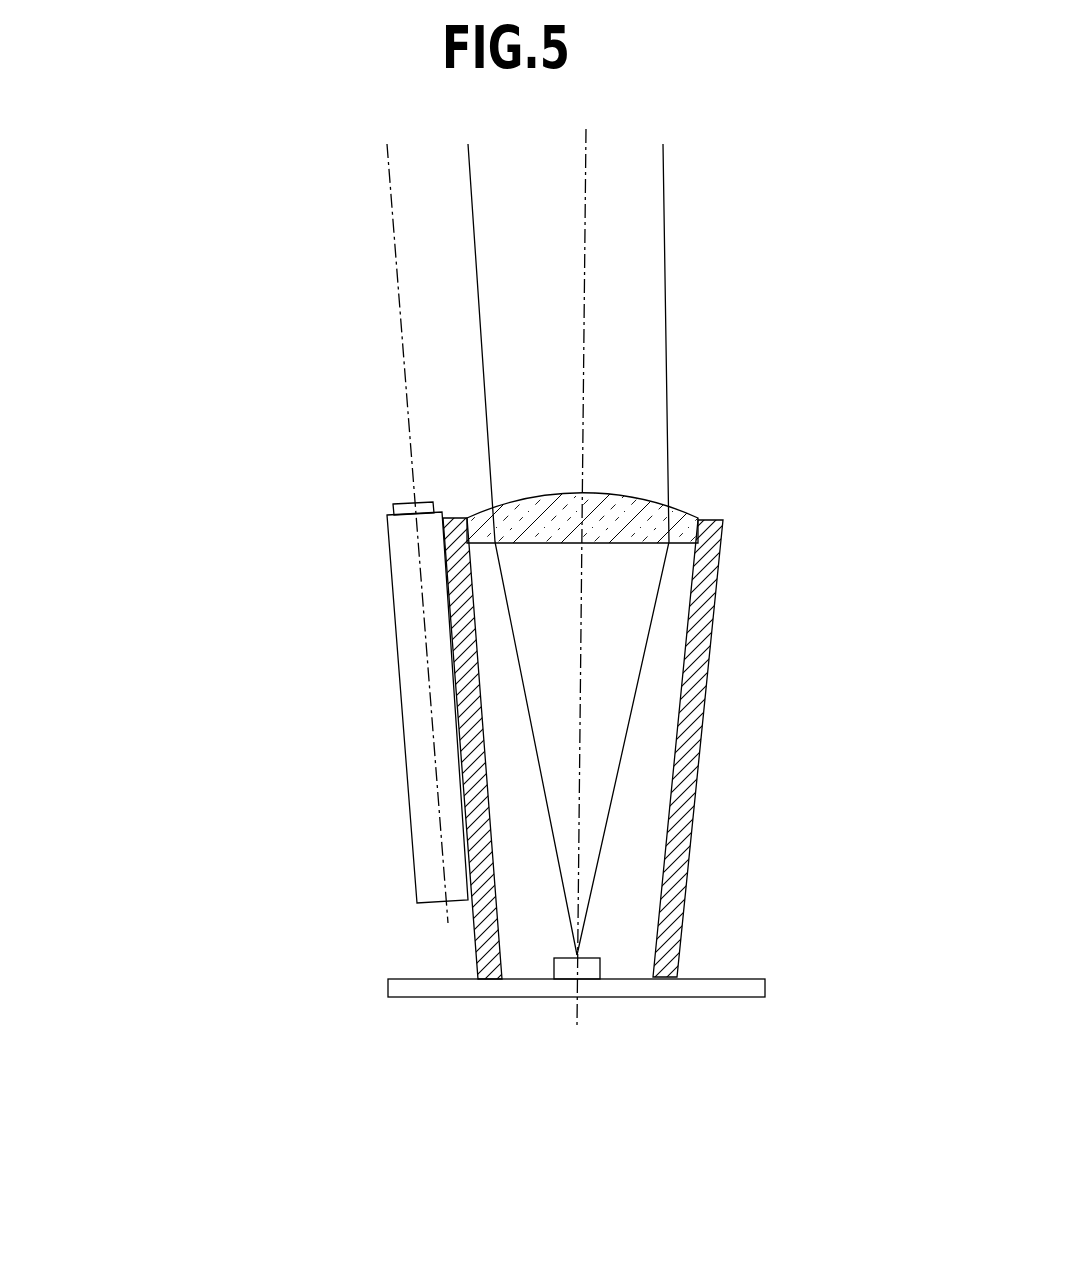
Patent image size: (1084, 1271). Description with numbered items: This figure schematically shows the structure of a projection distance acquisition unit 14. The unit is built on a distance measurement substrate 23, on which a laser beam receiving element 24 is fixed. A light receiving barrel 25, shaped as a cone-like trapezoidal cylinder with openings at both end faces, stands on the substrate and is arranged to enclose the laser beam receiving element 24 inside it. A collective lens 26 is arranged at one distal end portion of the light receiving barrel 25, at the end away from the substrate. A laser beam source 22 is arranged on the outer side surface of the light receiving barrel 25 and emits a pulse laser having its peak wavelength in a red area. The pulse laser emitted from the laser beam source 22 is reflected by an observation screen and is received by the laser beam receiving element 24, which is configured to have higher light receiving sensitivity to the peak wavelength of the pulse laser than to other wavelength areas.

The projection distance acquisition unit 14 is at (502, 637).
The laser beam source 22 is at (423, 818).
The distance measurement substrate 23 is at (448, 987).
The laser beam receiving element 24 is at (588, 975).
The light receiving barrel 25 is at (690, 758).
The collective lens 26 is at (803, 472).